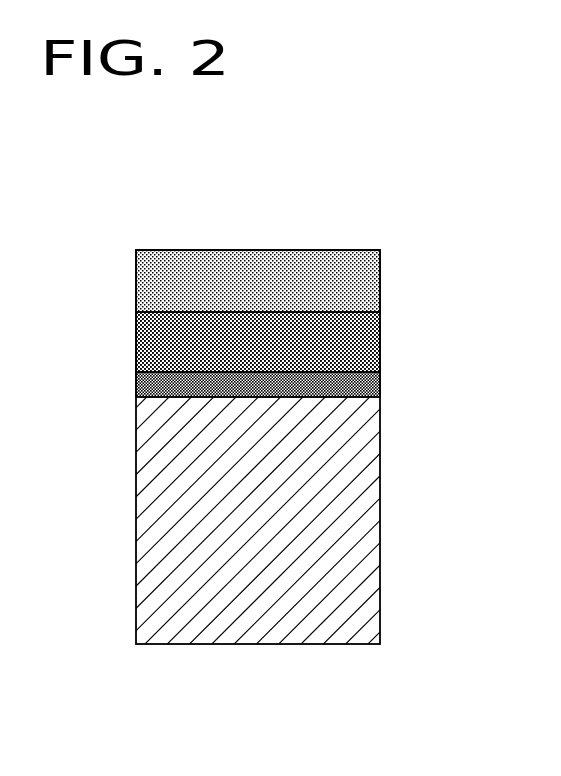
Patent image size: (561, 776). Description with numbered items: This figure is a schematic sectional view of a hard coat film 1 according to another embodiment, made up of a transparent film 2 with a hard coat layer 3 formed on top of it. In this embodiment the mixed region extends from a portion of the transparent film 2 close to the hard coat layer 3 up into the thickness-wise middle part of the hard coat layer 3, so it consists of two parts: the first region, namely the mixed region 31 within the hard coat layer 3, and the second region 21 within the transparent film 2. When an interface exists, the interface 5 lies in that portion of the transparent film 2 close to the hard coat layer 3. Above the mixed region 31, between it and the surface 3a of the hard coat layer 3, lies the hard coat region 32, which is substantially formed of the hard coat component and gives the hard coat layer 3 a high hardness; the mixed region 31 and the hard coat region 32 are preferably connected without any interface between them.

The hard coat film 1 is at (335, 656).
The transparent film 2 is at (441, 375).
The second region 21 is at (380, 374).
The hard coat layer 3 is at (305, 311).
The mixed region 31 is at (286, 342).
The hard coat region 32 is at (386, 250).
The surface of the hard coat layer 3a is at (282, 250).
The interface 5 is at (137, 393).